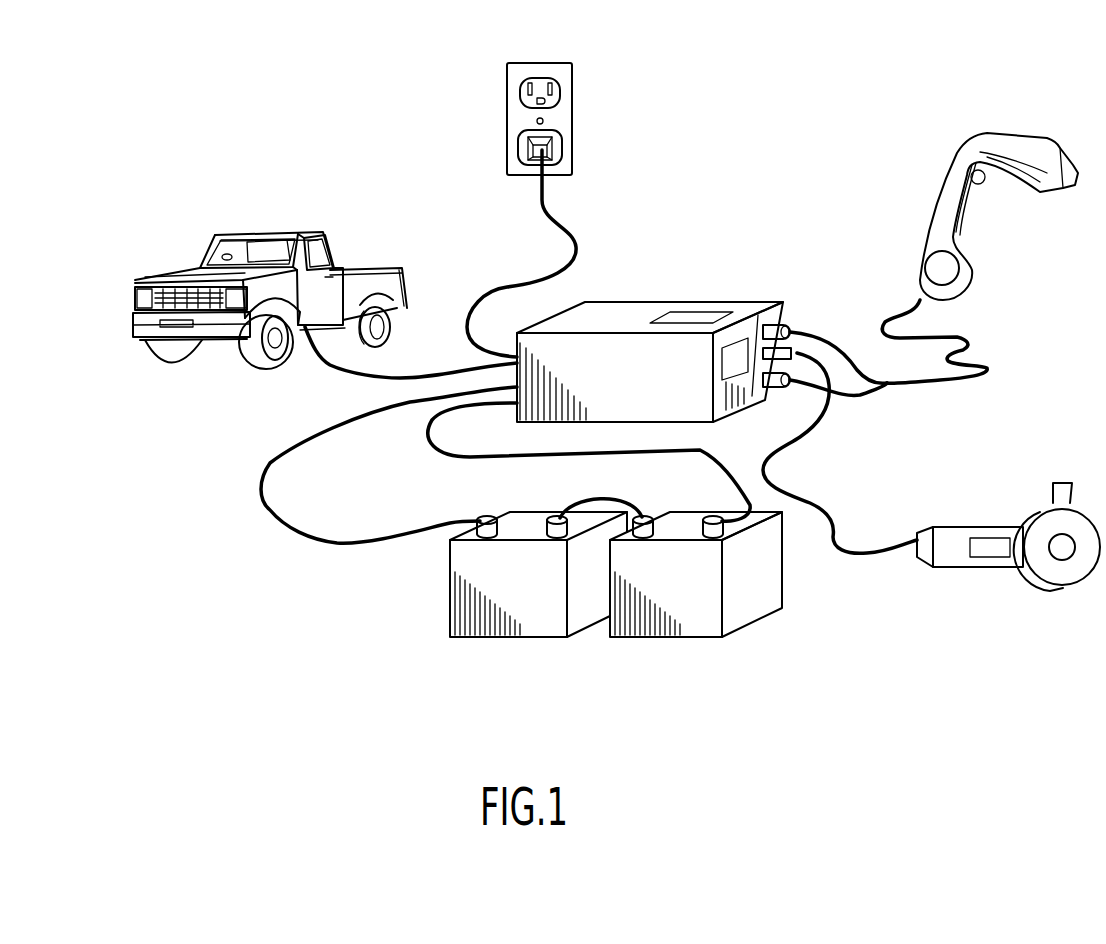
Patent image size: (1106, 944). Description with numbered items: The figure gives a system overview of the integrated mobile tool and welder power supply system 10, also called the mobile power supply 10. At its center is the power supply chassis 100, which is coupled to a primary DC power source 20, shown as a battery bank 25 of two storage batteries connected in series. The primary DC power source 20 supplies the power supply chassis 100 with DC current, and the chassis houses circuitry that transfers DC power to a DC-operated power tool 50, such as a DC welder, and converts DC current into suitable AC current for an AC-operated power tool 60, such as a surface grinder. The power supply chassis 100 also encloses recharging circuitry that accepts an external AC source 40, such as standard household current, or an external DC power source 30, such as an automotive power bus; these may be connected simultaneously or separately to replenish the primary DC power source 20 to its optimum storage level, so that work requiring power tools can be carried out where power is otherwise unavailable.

The integrated mobile tool and welder power supply system 10 is at (670, 286).
The primary DC power source 20 is at (560, 626).
The battery bank 25 is at (447, 601).
The external DC power source 30 is at (275, 232).
The external AC source 40 is at (573, 108).
The DC-operated power tool 50 is at (992, 133).
The AC-operated power tool 60 is at (990, 567).
The power supply chassis 100 is at (765, 300).